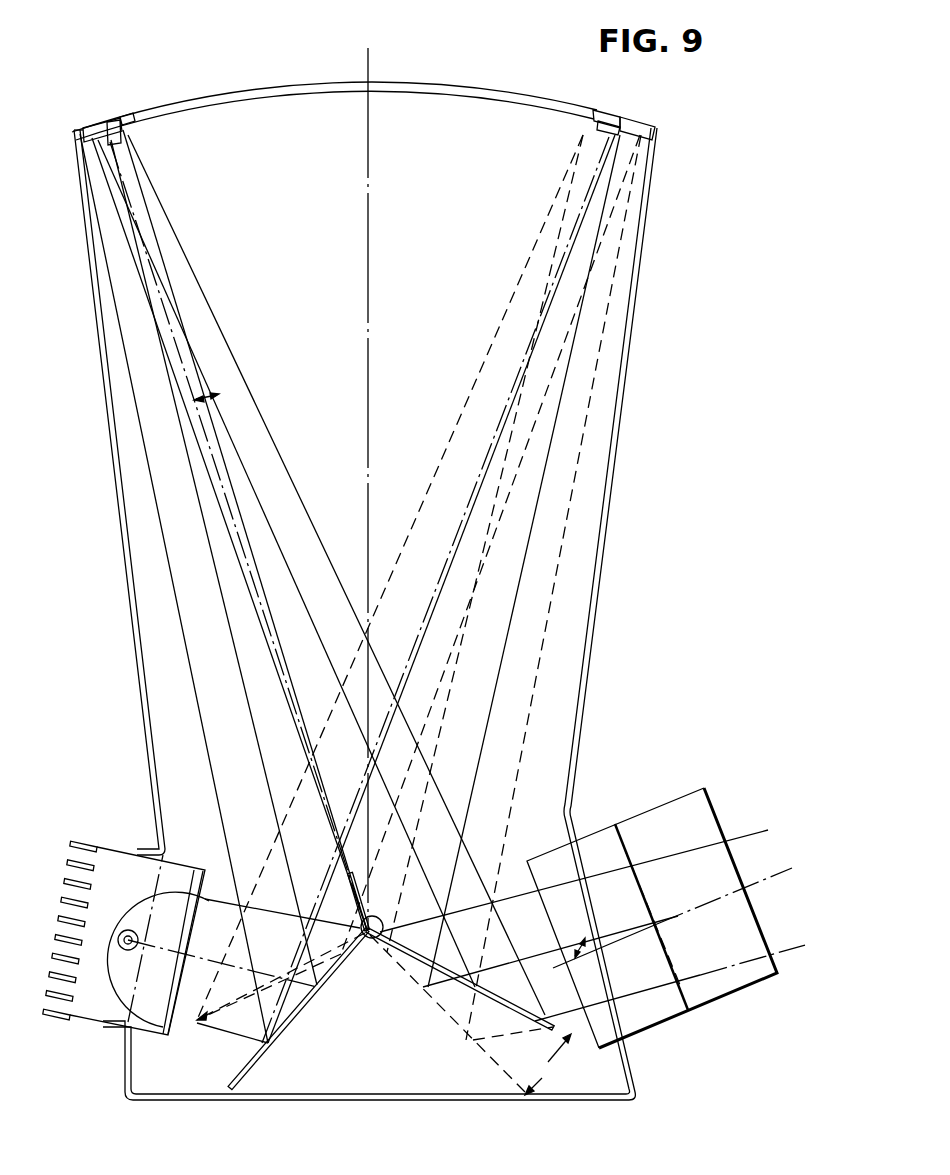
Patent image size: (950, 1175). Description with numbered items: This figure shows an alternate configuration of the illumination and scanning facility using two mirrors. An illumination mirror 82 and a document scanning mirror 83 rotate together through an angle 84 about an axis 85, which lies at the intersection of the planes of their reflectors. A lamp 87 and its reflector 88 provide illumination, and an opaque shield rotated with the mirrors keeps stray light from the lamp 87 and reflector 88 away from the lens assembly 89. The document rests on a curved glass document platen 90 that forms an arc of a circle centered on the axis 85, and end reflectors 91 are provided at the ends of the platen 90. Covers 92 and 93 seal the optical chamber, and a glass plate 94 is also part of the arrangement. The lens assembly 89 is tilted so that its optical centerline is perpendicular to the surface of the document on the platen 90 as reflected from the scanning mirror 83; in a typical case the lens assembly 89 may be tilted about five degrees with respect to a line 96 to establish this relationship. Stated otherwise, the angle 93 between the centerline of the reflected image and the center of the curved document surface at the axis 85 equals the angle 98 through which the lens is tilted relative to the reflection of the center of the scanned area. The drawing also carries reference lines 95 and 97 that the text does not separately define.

The illumination mirror 82 is at (278, 1040).
The document scanning mirror 83 is at (541, 1032).
The angle 84 is at (548, 1064).
The axis 85 is at (368, 944).
The lamp 87 is at (136, 934).
The reflector 88 is at (117, 990).
The lens assembly 89 is at (705, 1010).
The curved glass document platen 90 is at (208, 106).
The end reflectors 91 is at (432, 250).
The cover 92 is at (138, 648).
The cover 93 is at (380, 1103).
The glass plate 94 is at (190, 928).
The detector axis 95 is at (752, 880).
The line 96 is at (630, 910).
The beam offset 97 is at (206, 395).
The angle 98 is at (580, 944).